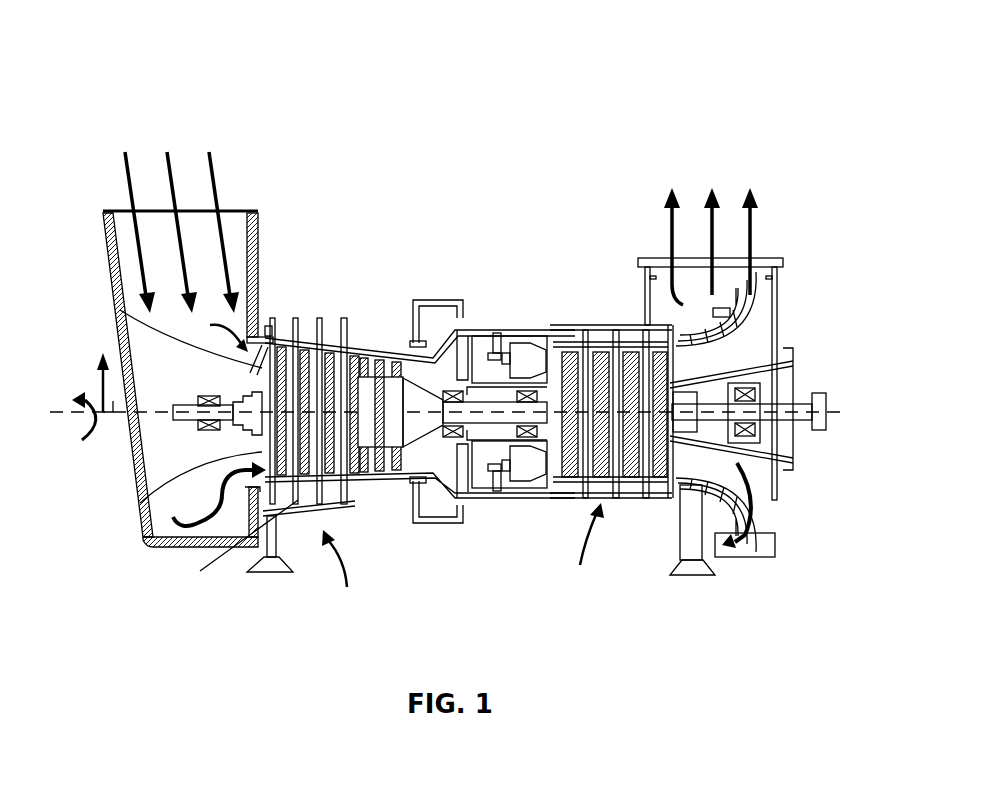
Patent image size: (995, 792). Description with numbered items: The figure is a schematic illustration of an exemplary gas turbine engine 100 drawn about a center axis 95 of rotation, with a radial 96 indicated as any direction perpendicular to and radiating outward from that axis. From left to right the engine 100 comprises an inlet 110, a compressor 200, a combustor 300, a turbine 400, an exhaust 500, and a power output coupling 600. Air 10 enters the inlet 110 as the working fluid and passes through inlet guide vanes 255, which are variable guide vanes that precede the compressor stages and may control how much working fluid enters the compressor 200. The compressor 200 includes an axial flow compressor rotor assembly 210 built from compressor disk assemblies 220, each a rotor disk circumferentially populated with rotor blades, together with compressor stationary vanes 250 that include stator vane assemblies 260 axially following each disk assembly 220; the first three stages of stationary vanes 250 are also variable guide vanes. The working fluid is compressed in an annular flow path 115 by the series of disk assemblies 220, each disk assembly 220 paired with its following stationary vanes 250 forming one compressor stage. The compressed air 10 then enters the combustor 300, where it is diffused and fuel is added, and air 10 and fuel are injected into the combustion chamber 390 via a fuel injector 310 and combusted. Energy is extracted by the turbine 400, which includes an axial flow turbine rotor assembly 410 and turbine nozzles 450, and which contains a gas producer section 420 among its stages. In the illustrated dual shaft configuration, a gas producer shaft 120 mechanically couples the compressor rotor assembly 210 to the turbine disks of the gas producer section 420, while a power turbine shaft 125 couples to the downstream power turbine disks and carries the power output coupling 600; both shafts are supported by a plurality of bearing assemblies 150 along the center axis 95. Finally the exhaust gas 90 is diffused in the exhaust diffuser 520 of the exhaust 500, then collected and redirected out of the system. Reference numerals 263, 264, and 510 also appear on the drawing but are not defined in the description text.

The gas turbine engine 100 is at (133, 42).
The air 10 is at (128, 182).
The inlet 110 is at (93, 128).
The annular flow path 115 is at (209, 333).
The gas producer shaft 120 is at (182, 406).
The power turbine shaft 125 is at (802, 420).
The bearing assemblies 150 is at (213, 432).
The compressor 200 is at (440, 128).
The compressor rotor assembly 210 is at (283, 558).
The compressor disk assemblies 220 is at (300, 512).
The compressor stationary vanes 250 is at (343, 318).
The inlet guide vanes 255 is at (252, 372).
The stator vane assemblies 260 is at (390, 350).
The support bar 263 is at (332, 507).
The variable vanes 264 is at (296, 318).
The combustor 300 is at (540, 128).
The fuel injectors 310 is at (495, 325).
The combustion chambers 390 is at (527, 343).
The turbine 400 is at (668, 128).
The turbine rotor assembly 410 is at (611, 460).
The gas producer section 420 is at (658, 490).
The turbine nozzles 450 is at (630, 330).
The exhaust 500 is at (802, 148).
The exhaust duct 510 is at (697, 333).
The exhaust diffuser 520 is at (760, 296).
The power output coupling 600 is at (820, 390).
The exhaust gas 90 is at (672, 222).
The center axis 95 is at (78, 426).
The radial 96 is at (102, 380).